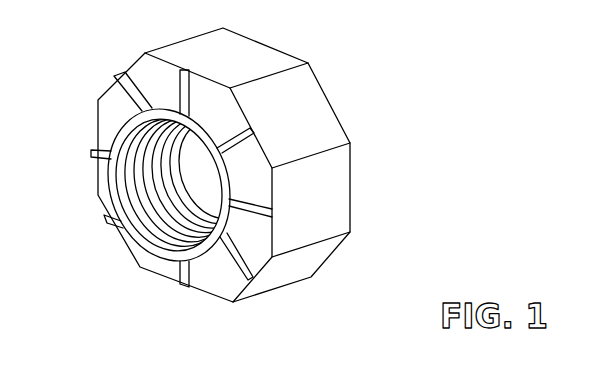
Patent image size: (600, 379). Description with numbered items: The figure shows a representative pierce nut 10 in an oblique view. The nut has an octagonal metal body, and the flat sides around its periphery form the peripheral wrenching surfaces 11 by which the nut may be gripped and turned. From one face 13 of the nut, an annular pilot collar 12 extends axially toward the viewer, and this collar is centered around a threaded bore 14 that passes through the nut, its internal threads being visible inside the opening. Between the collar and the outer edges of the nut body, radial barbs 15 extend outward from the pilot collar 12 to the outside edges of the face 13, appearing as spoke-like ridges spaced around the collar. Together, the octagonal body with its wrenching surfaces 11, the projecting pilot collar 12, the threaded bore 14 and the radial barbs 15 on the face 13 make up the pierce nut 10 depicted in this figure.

The pierce nut 10 is at (429, 106).
The peripheral wrenching surfaces 11 is at (333, 151).
The pilot collar 12 is at (109, 194).
The face 13 is at (252, 222).
The threaded bore 14 is at (160, 240).
The radial barbs 15 is at (123, 81).